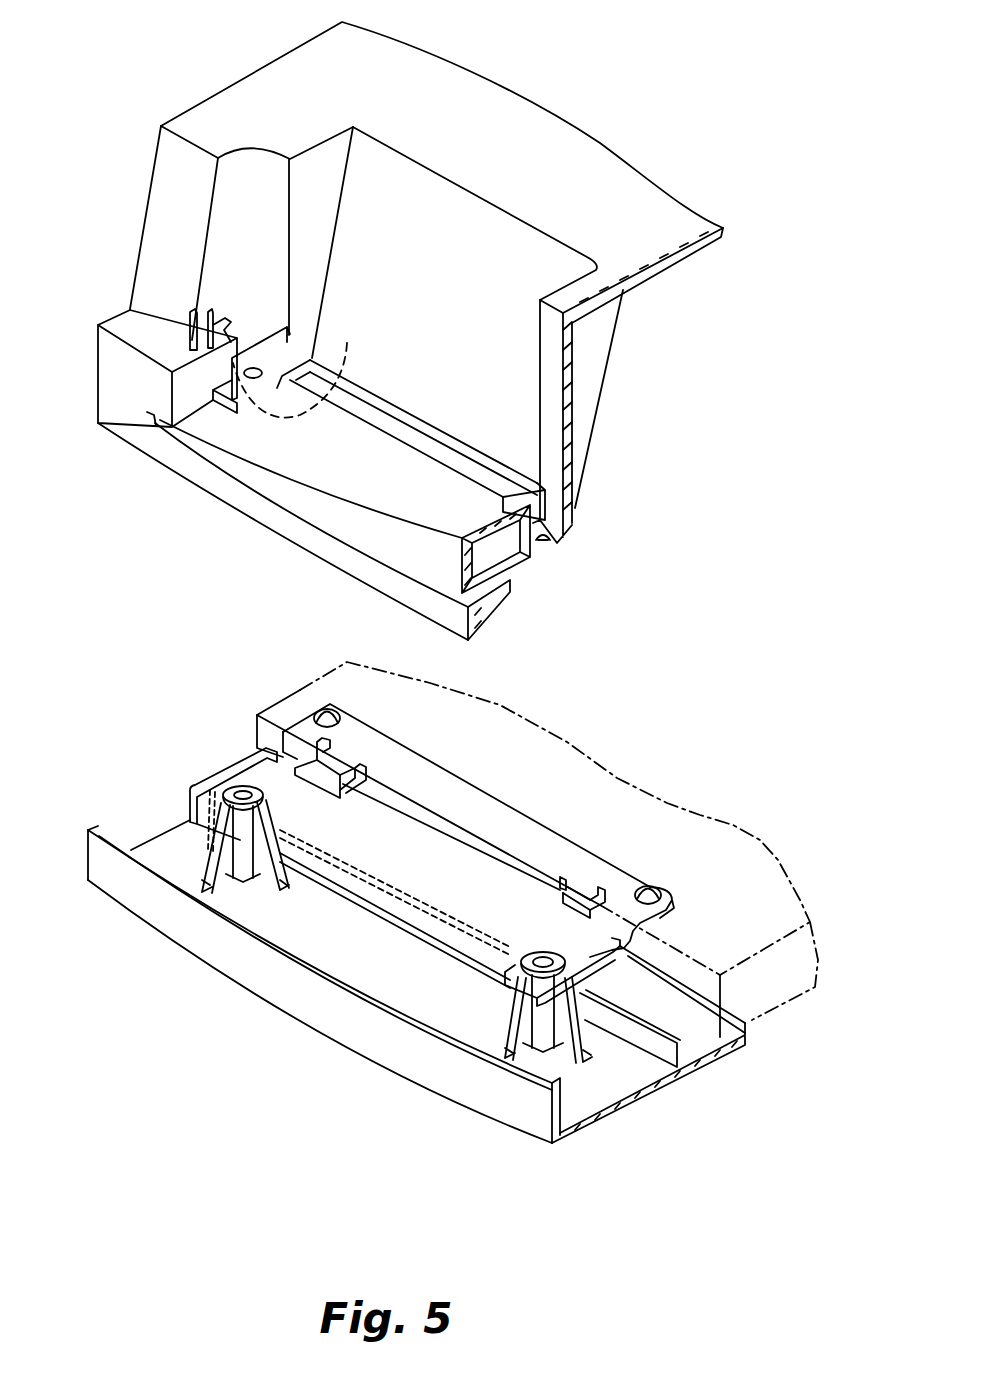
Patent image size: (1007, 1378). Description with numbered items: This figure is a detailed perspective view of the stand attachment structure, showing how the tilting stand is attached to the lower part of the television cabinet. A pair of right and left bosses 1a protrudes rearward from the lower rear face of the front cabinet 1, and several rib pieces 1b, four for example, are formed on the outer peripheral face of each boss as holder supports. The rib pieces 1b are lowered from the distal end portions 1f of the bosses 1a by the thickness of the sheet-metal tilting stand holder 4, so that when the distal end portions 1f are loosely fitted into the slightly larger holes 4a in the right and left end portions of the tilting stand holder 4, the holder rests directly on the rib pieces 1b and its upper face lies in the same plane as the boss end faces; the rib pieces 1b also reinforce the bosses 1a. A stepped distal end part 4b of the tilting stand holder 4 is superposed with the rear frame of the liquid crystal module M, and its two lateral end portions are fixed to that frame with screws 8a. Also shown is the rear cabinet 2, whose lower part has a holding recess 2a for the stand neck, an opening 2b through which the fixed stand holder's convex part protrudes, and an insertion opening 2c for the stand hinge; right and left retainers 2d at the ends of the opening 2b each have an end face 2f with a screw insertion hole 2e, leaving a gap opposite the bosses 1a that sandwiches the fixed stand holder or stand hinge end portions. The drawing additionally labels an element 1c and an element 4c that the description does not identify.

The front cabinet 1 is at (293, 1000).
The bosses 1a is at (240, 867).
The rib pieces 1b is at (200, 880).
The clip bracket 1c is at (227, 767).
The distal end portions 1f is at (262, 772).
The rear cabinet 2 is at (280, 80).
The holding recess 2a is at (435, 210).
The opening 2b is at (325, 450).
The insertion opening 2c is at (150, 415).
The retainers 2d is at (265, 340).
The screw insertion hole 2e is at (247, 340).
The end face 2f is at (333, 370).
The tilting stand holder 4 is at (470, 873).
The holes 4a is at (248, 783).
The stepped distal end part 4b is at (448, 785).
The clip 4c is at (332, 768).
The screws 8a is at (330, 708).
The liquid crystal module M is at (773, 1010).